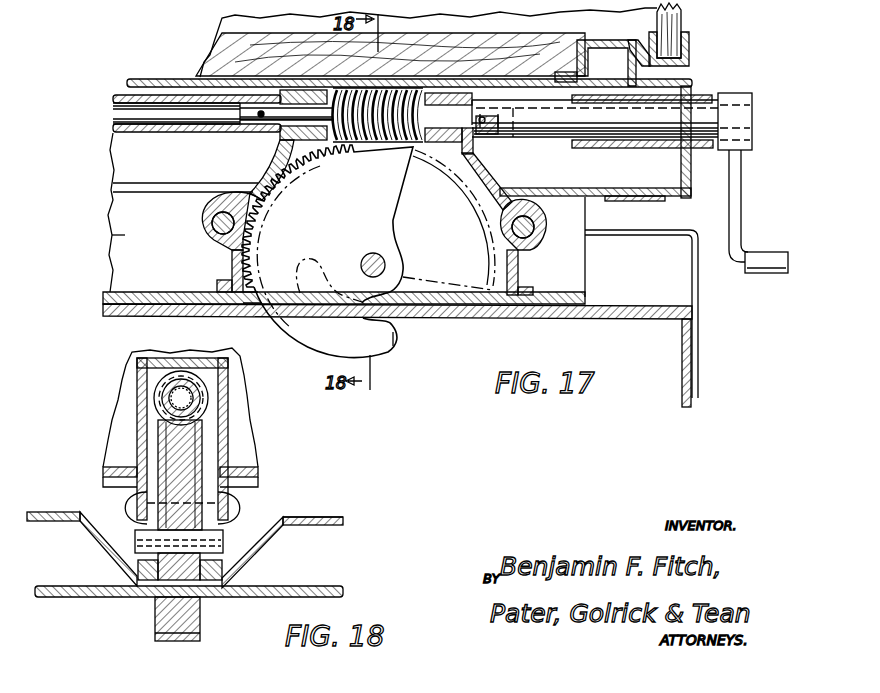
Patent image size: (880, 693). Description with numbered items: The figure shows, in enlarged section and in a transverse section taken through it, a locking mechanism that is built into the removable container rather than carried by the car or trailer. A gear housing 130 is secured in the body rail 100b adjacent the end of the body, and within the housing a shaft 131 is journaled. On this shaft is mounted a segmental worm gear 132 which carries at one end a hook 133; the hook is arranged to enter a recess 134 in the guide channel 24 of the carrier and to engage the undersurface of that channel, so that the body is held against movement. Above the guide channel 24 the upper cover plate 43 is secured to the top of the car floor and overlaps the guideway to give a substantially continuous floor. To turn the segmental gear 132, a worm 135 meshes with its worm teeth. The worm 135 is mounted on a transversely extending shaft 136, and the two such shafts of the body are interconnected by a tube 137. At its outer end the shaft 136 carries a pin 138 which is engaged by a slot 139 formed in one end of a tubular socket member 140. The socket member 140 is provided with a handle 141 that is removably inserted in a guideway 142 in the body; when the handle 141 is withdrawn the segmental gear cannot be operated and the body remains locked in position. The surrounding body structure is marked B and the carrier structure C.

In FIG. 17, the guide channel 24 is at (110, 278).
In FIG. 18, the guide channel 24 is at (252, 560).
In FIG. 17, the upper cover plate 43 is at (660, 232).
In FIG. 17, the body rail 100b is at (88, 237).
In FIG. 17, the gear housing 130 is at (228, 246).
In FIG. 18, the gear housing 130 is at (138, 492).
In FIG. 17, the shaft 131 is at (386, 265).
In FIG. 18, the shaft 131 is at (222, 541).
In FIG. 17, the segmental worm gear 132 is at (368, 251).
In FIG. 18, the segmental worm gear 132 is at (170, 444).
In FIG. 17, the hook 133 is at (396, 342).
In FIG. 18, the hook 133 is at (155, 618).
In FIG. 17, the recess 134 is at (251, 312).
In FIG. 17, the worm 135 is at (368, 142).
In FIG. 18, the worm 135 is at (160, 393).
In FIG. 17, the shaft 136 is at (280, 120).
In FIG. 18, the shaft 136 is at (192, 396).
In FIG. 17, the tube 137 is at (162, 115).
In FIG. 17, the pin 138 is at (492, 120).
In FIG. 17, the slot 139 is at (483, 126).
In FIG. 17, the socket member 140 is at (595, 121).
In FIG. 17, the handle 141 is at (735, 192).
In FIG. 17, the guideway 142 is at (721, 95).
In FIG. 17, the post B is at (690, 24).
In FIG. 18, the post B is at (228, 435).
In FIG. 17, the channel C is at (698, 356).
In FIG. 18, the channel C is at (298, 516).